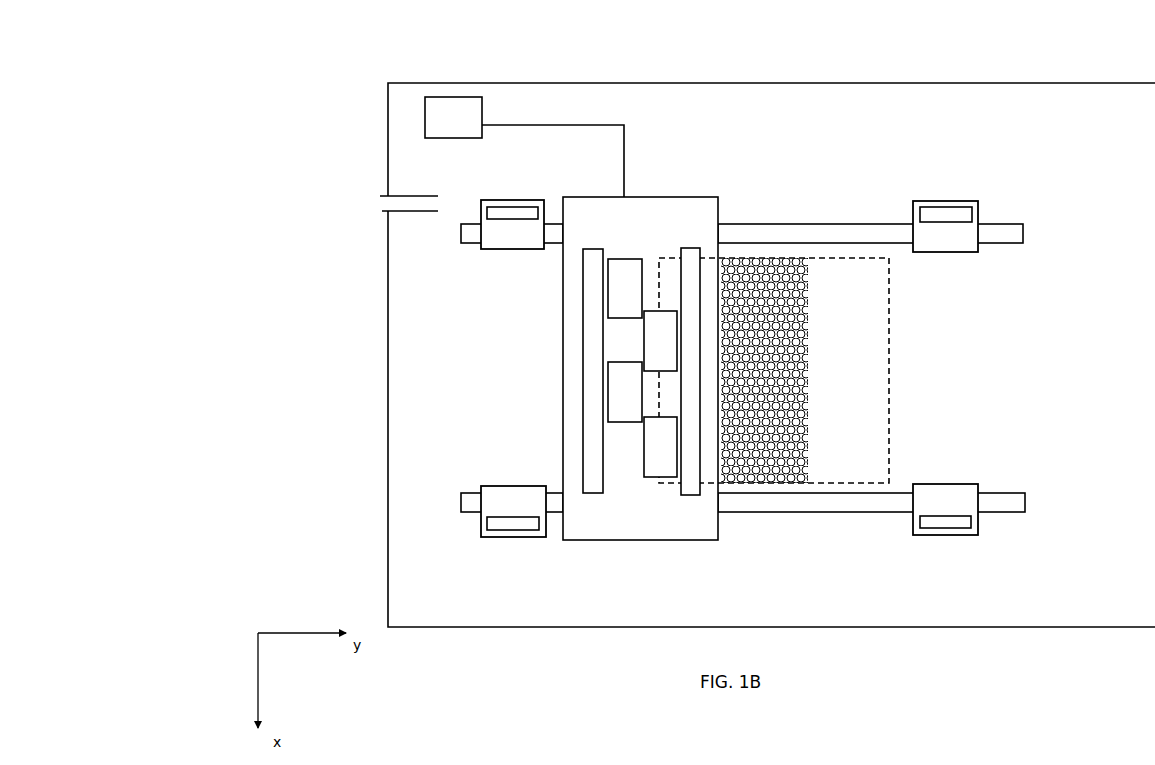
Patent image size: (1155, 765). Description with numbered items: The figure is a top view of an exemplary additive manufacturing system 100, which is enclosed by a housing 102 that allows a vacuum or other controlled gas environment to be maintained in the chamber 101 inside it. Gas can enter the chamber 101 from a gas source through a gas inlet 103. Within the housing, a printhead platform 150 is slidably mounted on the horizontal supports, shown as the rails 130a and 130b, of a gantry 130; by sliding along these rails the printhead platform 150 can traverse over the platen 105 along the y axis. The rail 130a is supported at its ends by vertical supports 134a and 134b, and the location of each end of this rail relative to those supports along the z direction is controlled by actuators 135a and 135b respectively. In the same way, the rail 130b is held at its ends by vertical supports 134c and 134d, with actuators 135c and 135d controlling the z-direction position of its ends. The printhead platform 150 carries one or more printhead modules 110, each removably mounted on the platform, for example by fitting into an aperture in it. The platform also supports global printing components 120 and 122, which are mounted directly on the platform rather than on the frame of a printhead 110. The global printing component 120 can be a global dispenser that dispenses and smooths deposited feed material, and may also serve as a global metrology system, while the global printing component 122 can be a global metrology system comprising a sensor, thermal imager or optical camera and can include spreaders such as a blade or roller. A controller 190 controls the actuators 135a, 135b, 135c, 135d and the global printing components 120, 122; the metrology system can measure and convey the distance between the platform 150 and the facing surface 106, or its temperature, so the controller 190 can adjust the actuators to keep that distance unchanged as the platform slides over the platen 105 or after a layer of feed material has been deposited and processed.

The additive manufacturing system 100 is at (334, 74).
The chamber 101 is at (1148, 171).
The housing 102 is at (777, 85).
The gas inlet 103 is at (383, 205).
The platen 105 is at (774, 370).
The facing surface 106 is at (743, 275).
The printhead module 110 is at (617, 284).
The global printing component 120 is at (696, 474).
The global printing component 122 is at (593, 413).
The gantry 130 is at (801, 368).
The rail 130a is at (997, 500).
The rail 130b is at (997, 233).
The vertical support 134a is at (523, 525).
The vertical support 134b is at (954, 523).
The vertical support 134c is at (923, 213).
The vertical support 134d is at (497, 212).
The actuator 135a is at (492, 512).
The actuator 135b is at (925, 508).
The actuator 135c is at (968, 228).
The actuator 135d is at (538, 225).
The printhead platform 150 is at (687, 533).
The controller 190 is at (524, 147).